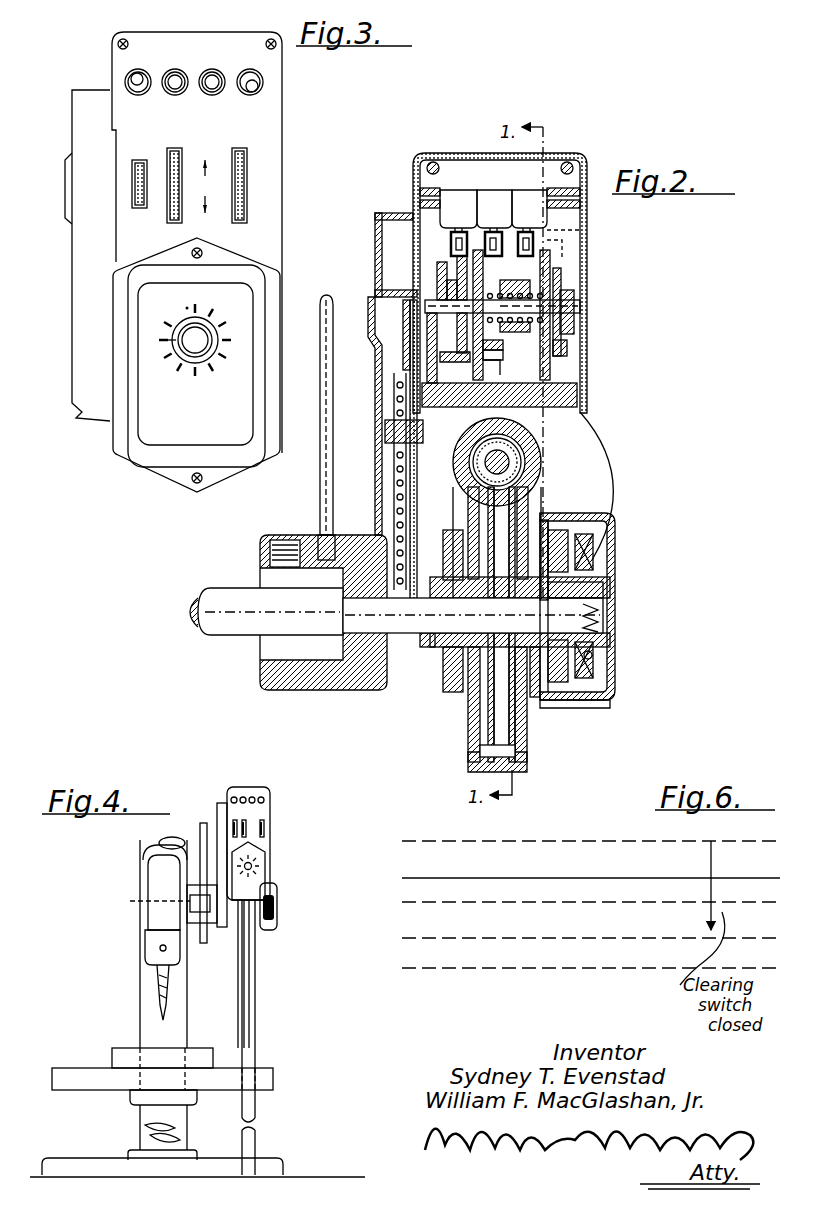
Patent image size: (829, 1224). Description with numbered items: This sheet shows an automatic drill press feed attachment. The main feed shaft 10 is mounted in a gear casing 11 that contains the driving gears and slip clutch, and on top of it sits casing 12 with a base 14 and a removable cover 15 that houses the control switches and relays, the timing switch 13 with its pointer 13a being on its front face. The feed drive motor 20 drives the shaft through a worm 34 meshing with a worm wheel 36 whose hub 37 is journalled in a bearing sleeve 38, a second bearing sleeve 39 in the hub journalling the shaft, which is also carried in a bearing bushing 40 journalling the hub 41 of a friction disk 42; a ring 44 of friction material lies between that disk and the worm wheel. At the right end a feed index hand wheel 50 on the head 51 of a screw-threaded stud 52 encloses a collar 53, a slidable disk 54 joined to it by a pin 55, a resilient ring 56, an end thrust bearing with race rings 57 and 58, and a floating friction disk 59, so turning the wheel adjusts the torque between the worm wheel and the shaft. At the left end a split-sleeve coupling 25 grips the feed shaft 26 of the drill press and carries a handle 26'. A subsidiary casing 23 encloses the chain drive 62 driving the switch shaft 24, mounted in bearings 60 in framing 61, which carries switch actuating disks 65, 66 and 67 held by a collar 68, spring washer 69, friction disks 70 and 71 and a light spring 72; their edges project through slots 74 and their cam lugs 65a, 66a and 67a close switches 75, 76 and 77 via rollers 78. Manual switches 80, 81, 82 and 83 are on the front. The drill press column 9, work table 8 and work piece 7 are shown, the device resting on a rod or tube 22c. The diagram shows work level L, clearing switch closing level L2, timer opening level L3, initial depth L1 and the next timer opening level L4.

In FIG. 4, the work piece 7 is at (122, 1050).
In FIG. 4, the work table 8 is at (80, 1078).
In FIG. 4, the column 9 is at (140, 985).
In FIG. 2, the feed shaft 10 is at (473, 615).
In FIG. 2, the gear casing 11 is at (556, 480).
In FIG. 4, the gear casing 11 is at (258, 930).
In FIG. 3, the casing 12 is at (288, 122).
In FIG. 2, the casing 12 is at (590, 332).
In FIG. 4, the casing 12 is at (274, 812).
In FIG. 3, the timing switch 13 is at (195, 364).
In FIG. 4, the timing switch 13 is at (265, 878).
In FIG. 3, the pointer 13a is at (178, 344).
In FIG. 2, the base 14 is at (585, 402).
In FIG. 2, the removable cover 15 is at (458, 152).
In FIG. 2, the feed drive motor 20 is at (612, 446).
In FIG. 4, the rod or tube 22c is at (256, 988).
In FIG. 2, the subsidiary casing 23 is at (372, 372).
In FIG. 4, the subsidiary casing 23 is at (222, 803).
In FIG. 2, the switch shaft 24 is at (502, 308).
In FIG. 2, the split-sleeve coupling 25 is at (306, 680).
In FIG. 4, the split-sleeve coupling 25 is at (213, 920).
In FIG. 2, the feed shaft of drill press 26 is at (266, 611).
In FIG. 4, the feed shaft of drill press 26 is at (148, 901).
In FIG. 2, the handle 26' is at (314, 427).
In FIG. 4, the handle 26' is at (199, 895).
In FIG. 2, the worm 34 is at (517, 470).
In FIG. 2, the worm wheel 36 is at (462, 498).
In FIG. 2, the hub 37 is at (528, 548).
In FIG. 2, the bearing sleeve 38 is at (530, 705).
In FIG. 2, the bearing sleeve 39 is at (545, 700).
In FIG. 2, the bearing bushing 40 is at (458, 662).
In FIG. 2, the hub 41 is at (432, 648).
In FIG. 2, the friction disk 42 is at (462, 522).
In FIG. 2, the ring of friction material 44 is at (456, 548).
In FIG. 2, the feed index hand wheel 50 is at (612, 576).
In FIG. 4, the feed index hand wheel 50 is at (278, 906).
In FIG. 2, the head 51 is at (612, 612).
In FIG. 2, the screw-threaded stud 52 is at (612, 640).
In FIG. 2, the collar 53 is at (612, 666).
In FIG. 2, the disk 54 is at (575, 540).
In FIG. 2, the pin 55 is at (612, 598).
In FIG. 2, the ring of resilient material 56 is at (598, 708).
In FIG. 2, the race ring 57 is at (598, 530).
In FIG. 2, the race ring 58 is at (612, 554).
In FIG. 2, the friction disk 59 is at (546, 542).
In FIG. 2, the bearings 60 is at (375, 281).
In FIG. 2, the framing 61 is at (414, 216).
In FIG. 2, the chain drive 62 is at (396, 500).
In FIG. 3, the switch actuating disk 65 is at (132, 192).
In FIG. 2, the switch actuating disk 65 is at (475, 362).
In FIG. 2, the cam lug 65a is at (440, 272).
In FIG. 3, the switch actuating disk 66 is at (170, 222).
In FIG. 2, the switch actuating disk 66 is at (500, 360).
In FIG. 2, the cam lug 66a is at (505, 356).
In FIG. 3, the switch actuating disk 67 is at (240, 221).
In FIG. 2, the switch actuating disk 67 is at (553, 360).
In FIG. 2, the clearing switch lug 67a is at (527, 257).
In FIG. 2, the collar 68 is at (455, 340).
In FIG. 2, the spring washer 69 is at (450, 278).
In FIG. 2, the friction disk 70 is at (483, 335).
In FIG. 2, the friction disk 71 is at (574, 338).
In FIG. 2, the light spring 72 is at (525, 333).
In FIG. 3, the slots 74 is at (132, 201).
In FIG. 2, the top switch 75 is at (458, 209).
In FIG. 2, the switch 76 is at (494, 209).
In FIG. 2, the clearing switch 77 is at (529, 209).
In FIG. 2, the switch actuating roller 78 is at (457, 240).
In FIG. 3, the automatic switch 80 is at (126, 78).
In FIG. 3, the up push button 81 is at (176, 70).
In FIG. 3, the down push button 82 is at (220, 72).
In FIG. 3, the power switch 83 is at (262, 78).
In FIG. 6, the work top level L is at (591, 867).
In FIG. 6, the initial drilling depth level L1 is at (591, 927).
In FIG. 6, the clearing switch closing level L2 is at (591, 830).
In FIG. 6, the timer switch initial opening level L3 is at (591, 891).
In FIG. 6, the timer switch next opening level L4 is at (591, 957).